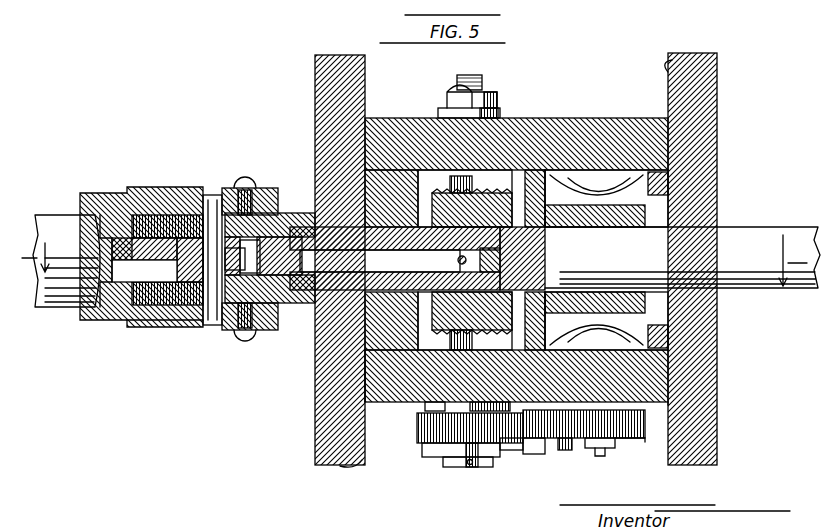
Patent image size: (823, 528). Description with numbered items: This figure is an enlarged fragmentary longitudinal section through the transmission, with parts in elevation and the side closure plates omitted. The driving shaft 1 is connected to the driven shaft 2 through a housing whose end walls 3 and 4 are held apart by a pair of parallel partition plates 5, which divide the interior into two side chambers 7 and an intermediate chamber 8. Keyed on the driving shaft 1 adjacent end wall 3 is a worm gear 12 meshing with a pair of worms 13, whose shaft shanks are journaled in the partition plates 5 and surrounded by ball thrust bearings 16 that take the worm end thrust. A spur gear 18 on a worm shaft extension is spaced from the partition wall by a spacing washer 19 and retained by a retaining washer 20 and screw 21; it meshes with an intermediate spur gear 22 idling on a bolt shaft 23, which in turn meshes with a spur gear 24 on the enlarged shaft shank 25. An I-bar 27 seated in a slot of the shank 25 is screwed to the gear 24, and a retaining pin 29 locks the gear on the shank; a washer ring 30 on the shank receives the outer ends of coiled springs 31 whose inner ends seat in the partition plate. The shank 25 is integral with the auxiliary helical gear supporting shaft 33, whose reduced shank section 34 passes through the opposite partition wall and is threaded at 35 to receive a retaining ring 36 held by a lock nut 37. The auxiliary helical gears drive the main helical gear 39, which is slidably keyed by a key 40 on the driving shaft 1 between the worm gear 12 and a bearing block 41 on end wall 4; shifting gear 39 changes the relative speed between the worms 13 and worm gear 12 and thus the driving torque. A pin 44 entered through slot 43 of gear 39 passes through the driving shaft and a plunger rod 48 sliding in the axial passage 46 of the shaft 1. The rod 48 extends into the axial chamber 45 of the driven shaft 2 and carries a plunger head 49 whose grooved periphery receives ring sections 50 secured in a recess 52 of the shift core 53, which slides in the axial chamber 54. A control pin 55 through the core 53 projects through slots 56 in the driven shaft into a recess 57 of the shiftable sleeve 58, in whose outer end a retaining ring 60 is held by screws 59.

The driving shaft 1 is at (768, 232).
The driven shaft 2 is at (48, 213).
The end wall 3 is at (717, 80).
The end wall 4 is at (315, 90).
The partition plate 5 is at (616, 128).
The side chamber 7 is at (345, 478).
The intermediate chamber 8 is at (420, 160).
The worm gear 12 is at (700, 160).
The worm 13 is at (542, 165).
The ball thrust bearing 16 is at (575, 185).
The spur gear 18 is at (648, 440).
The spacing washer 19 is at (672, 404).
The retaining washer 20 is at (612, 440).
The screw 21 is at (600, 458).
The intermediate spur gear 22 is at (533, 445).
The bolt shaft 23 is at (567, 452).
The spur gear 24 is at (433, 430).
The shaft bearing shank 25 is at (456, 458).
The I-bar 27 is at (513, 452).
The retaining pin 29 is at (473, 466).
The washer ring 30 is at (415, 413).
The coiled spring 31 is at (500, 402).
The auxiliary helical gear supporting shaft 33 is at (460, 322).
The shaft bearing shank section 34 is at (485, 190).
The threaded end 35 is at (470, 76).
The retaining ring 36 is at (500, 108).
The lock nut 37 is at (448, 100).
The main helical gear 39 is at (545, 276).
The key 40 is at (395, 218).
The bearing block 41 is at (330, 352).
The slot 43 is at (395, 312).
The pin 44 is at (456, 260).
The axial chamber 45 is at (285, 232).
The axial passage 46 is at (528, 258).
The plunger rod 48 is at (380, 261).
The plunger head 49 is at (265, 305).
The ring section 50 is at (258, 325).
The recess 52 is at (188, 272).
The shift core 53 is at (180, 290).
The axial chamber 54 is at (123, 275).
The control pin 55 is at (203, 330).
The slot 56 is at (155, 218).
The recess 57 is at (213, 193).
The shiftable sleeve 58 is at (135, 192).
The screw 59 is at (248, 186).
The retaining ring 60 is at (262, 196).